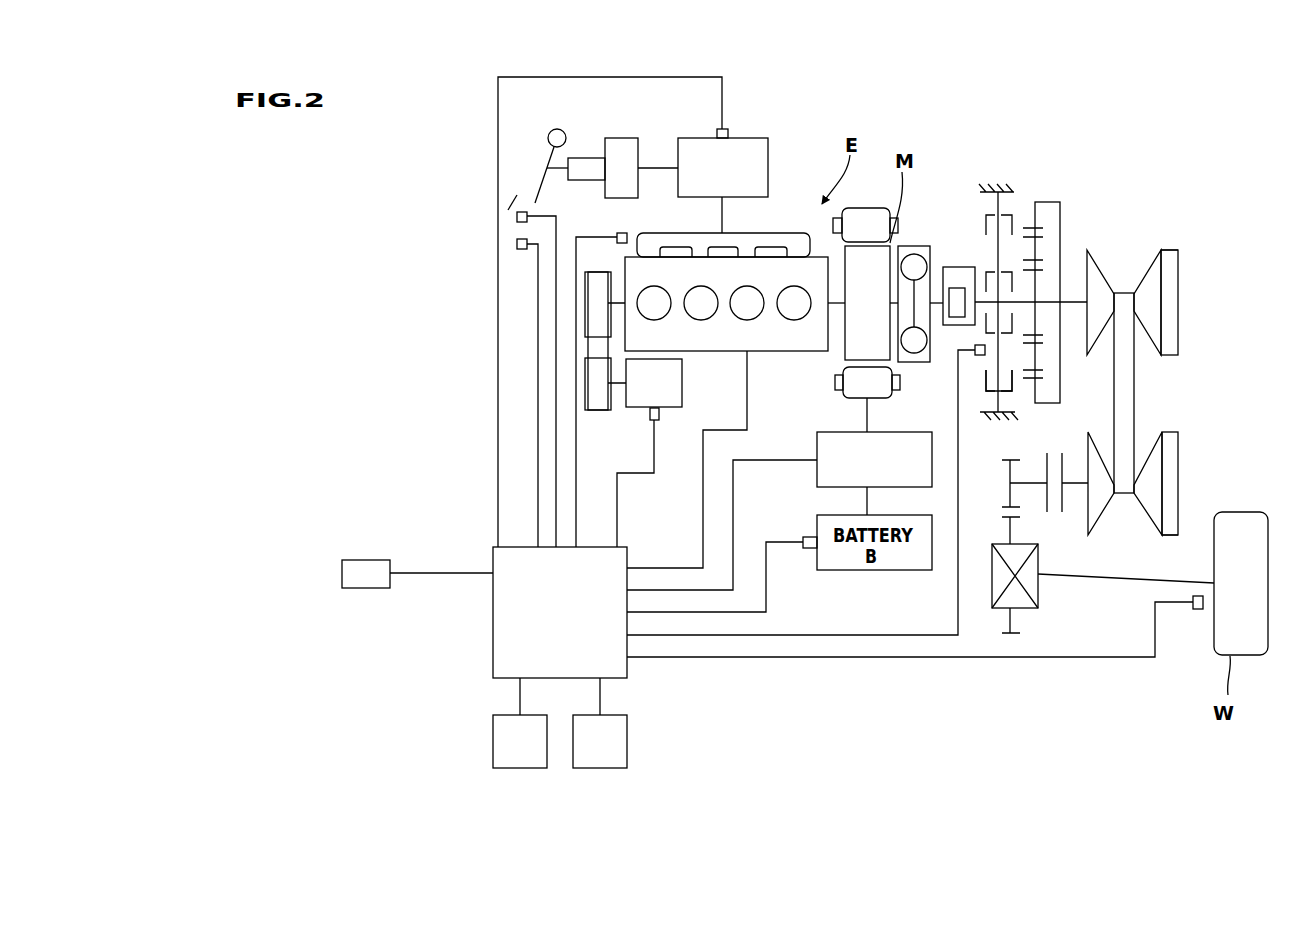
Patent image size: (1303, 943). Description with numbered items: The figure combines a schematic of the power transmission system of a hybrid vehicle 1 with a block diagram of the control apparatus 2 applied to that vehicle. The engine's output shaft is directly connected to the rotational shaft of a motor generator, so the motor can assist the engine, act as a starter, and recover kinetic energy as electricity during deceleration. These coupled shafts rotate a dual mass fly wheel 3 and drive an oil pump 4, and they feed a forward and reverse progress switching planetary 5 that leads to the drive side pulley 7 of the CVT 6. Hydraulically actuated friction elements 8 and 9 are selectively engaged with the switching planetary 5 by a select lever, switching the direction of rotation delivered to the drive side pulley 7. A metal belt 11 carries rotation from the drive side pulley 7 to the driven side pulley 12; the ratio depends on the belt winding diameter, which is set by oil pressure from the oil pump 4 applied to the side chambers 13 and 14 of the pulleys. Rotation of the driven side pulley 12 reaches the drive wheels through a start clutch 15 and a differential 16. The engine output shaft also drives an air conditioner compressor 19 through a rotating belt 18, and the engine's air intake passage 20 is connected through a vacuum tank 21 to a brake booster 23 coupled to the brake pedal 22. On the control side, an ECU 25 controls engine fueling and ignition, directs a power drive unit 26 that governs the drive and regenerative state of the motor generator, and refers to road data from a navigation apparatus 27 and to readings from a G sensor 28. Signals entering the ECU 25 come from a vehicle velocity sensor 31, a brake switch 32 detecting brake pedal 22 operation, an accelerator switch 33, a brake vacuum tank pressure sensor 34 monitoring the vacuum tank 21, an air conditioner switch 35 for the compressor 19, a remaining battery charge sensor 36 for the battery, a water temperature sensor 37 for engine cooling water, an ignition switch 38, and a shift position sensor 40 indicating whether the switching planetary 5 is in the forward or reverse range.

The hybrid vehicle 1 is at (884, 121).
The control apparatus 2 is at (458, 517).
The dual mass fly wheel 3 is at (918, 245).
The oil pump 4 is at (953, 266).
The forward and reverse progress switching planetary 5 is at (1050, 200).
The CVT 6 is at (1158, 247).
The drive side pulley 7 is at (1160, 327).
The hydraulically actuated friction element 8 is at (1015, 211).
The hydraulically actuated friction element 9 is at (1022, 398).
The metal belt 11 is at (1128, 382).
The driven side pulley 12 is at (1158, 490).
The side chamber 13 is at (1170, 270).
The side chamber 14 is at (1177, 447).
The start clutch 15 is at (1065, 524).
The differential 16 is at (1038, 593).
The rotating belt 18 is at (596, 410).
The air conditioner compressor 19 is at (627, 407).
The air intake passage 20 is at (790, 232).
The vacuum tank 21 is at (753, 138).
The brake pedal 22 is at (533, 200).
The brake booster 23 is at (620, 138).
The ECU 25 is at (490, 663).
The power drive unit 26 is at (815, 448).
The navigation apparatus 27 is at (627, 737).
The G sensor 28 is at (493, 732).
The vehicle velocity sensor 31 is at (1200, 610).
The brake switch 32 is at (517, 220).
The accelerator switch 33 is at (517, 245).
The brake vacuum tank pressure sensor 34 is at (725, 128).
The air conditioner switch 35 is at (650, 420).
The remaining battery charge sensor 36 is at (808, 548).
The water temperature sensor 37 is at (617, 238).
The ignition switch 38 is at (362, 560).
The shift position sensor 40 is at (980, 356).